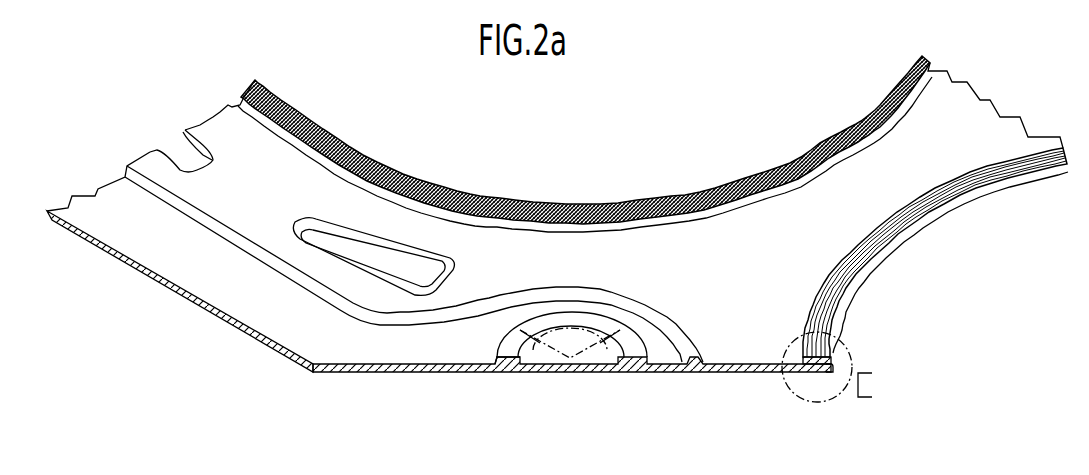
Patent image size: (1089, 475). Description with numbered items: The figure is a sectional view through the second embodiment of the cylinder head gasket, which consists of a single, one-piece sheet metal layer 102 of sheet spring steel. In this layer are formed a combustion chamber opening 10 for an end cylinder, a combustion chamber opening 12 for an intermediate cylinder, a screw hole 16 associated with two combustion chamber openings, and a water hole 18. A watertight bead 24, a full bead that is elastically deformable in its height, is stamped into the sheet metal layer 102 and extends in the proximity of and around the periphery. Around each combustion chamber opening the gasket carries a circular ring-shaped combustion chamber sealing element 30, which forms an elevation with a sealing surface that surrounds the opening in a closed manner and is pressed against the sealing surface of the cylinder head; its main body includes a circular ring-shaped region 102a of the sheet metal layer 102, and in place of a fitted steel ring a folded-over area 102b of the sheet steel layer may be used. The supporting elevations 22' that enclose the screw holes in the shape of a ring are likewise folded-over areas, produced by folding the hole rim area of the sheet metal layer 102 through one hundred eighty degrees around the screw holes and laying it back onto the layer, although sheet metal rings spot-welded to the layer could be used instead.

The combustion chamber opening 10 is at (905, 255).
The combustion chamber opening 12 is at (640, 190).
The screw hole 16 is at (534, 352).
The water hole 18 is at (398, 252).
The supporting elevation 22' is at (473, 390).
The watertight bead 24 is at (678, 332).
The combustion chamber sealing element 30 is at (248, 134).
The sheet metal layer 102 is at (770, 264).
The circular ring-shaped region 102a is at (808, 370).
The folded-over area 102b is at (822, 351).